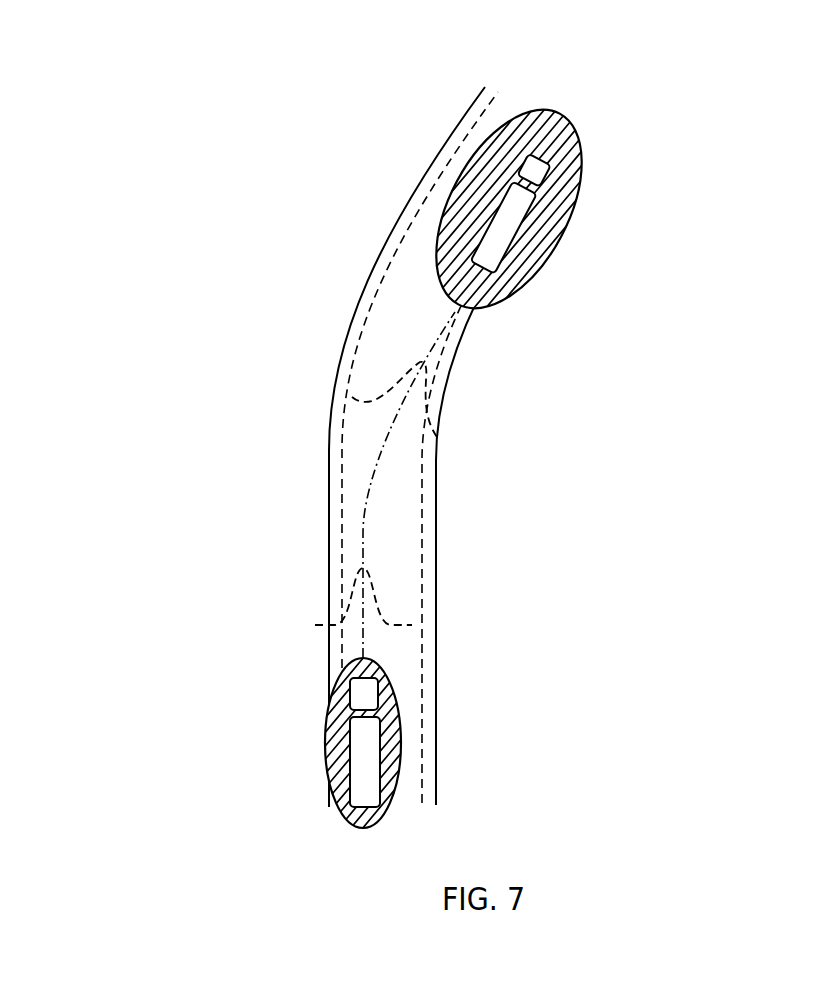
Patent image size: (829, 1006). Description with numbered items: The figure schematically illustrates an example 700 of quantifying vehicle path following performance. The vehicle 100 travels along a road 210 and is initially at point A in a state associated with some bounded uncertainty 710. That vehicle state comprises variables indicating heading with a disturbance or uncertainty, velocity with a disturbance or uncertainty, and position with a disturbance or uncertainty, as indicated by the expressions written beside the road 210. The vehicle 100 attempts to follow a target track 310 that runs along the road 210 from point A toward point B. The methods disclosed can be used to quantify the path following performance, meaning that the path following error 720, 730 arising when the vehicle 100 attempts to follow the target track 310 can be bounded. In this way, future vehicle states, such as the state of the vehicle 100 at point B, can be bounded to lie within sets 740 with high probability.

The example of quantifying vehicle path following performance 700 is at (107, 92).
The road 210 is at (361, 444).
The set 740 is at (562, 110).
The vehicle 100 is at (490, 252).
The path following error 730 is at (396, 392).
The target track 310 is at (368, 520).
The path following error 720 is at (345, 612).
The bounded uncertainty 710 is at (328, 688).